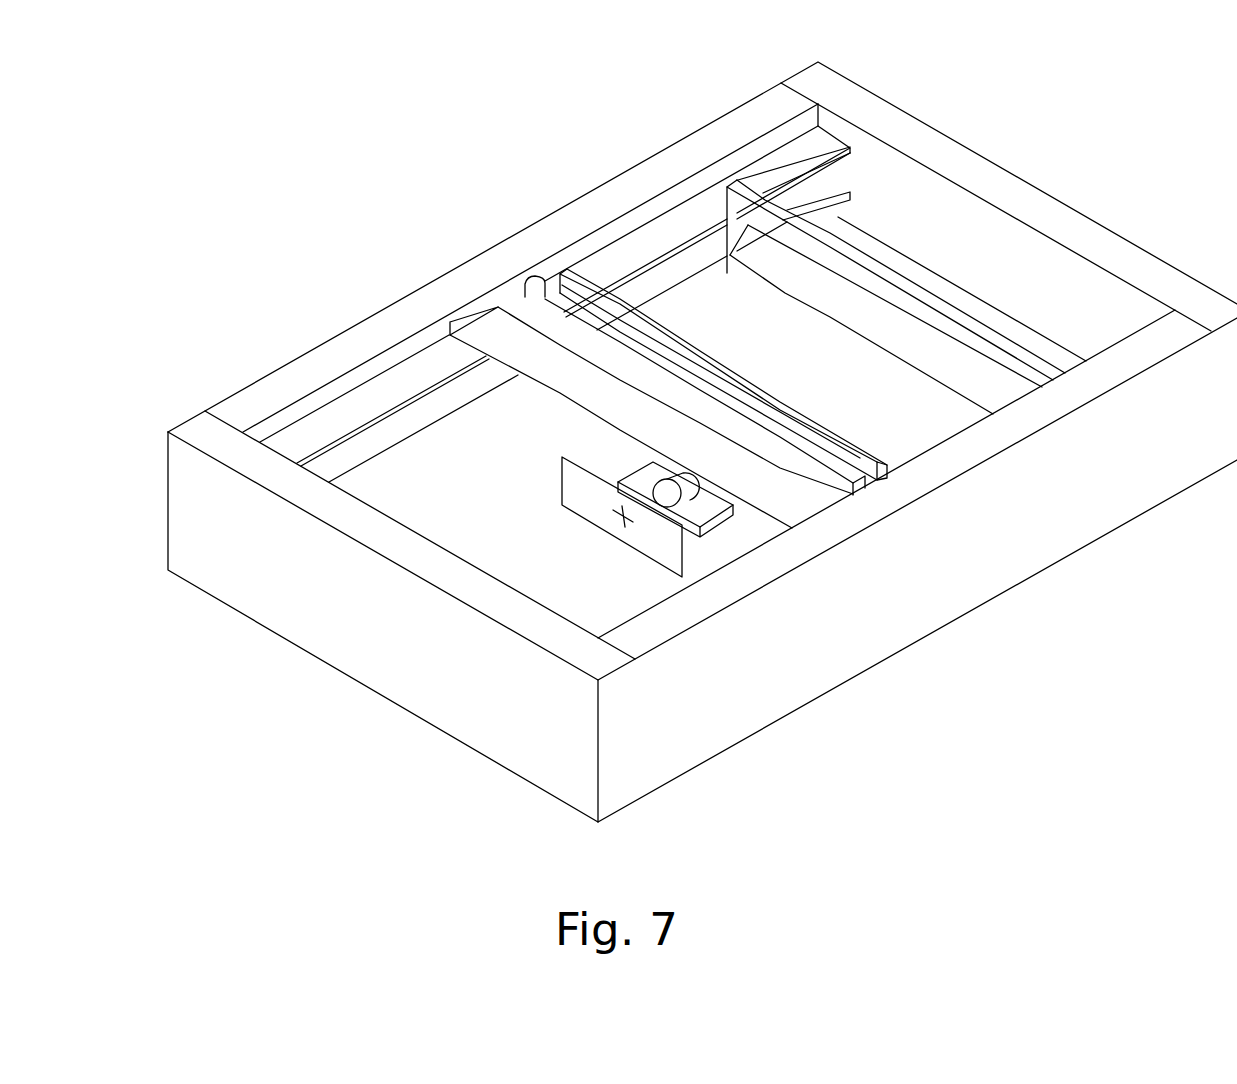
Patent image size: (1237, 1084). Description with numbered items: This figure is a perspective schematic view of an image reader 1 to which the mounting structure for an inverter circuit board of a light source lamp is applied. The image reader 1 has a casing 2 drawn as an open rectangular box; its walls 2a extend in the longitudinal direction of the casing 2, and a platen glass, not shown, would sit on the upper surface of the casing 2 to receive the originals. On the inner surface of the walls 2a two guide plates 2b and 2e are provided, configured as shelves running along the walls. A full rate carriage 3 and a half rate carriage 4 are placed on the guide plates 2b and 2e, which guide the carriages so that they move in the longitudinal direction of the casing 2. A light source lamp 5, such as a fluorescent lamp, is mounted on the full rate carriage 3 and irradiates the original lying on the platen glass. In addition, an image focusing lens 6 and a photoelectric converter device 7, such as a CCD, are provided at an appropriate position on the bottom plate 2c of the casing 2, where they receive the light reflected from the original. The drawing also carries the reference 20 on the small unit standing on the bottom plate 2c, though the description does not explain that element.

The image reader 1 is at (483, 187).
The casing 2 is at (668, 155).
The walls 2a is at (407, 300).
The guide plate 2b is at (310, 425).
The bottom plate 2c is at (440, 505).
The guide plate 2e is at (390, 435).
The full rate carriage 3 is at (855, 488).
The half rate carriage 4 is at (1043, 382).
The light source lamp 5 is at (880, 482).
The image focusing lens 6 is at (713, 513).
The photoelectric converter device 7 is at (597, 513).
The carriage unit 20 is at (555, 492).